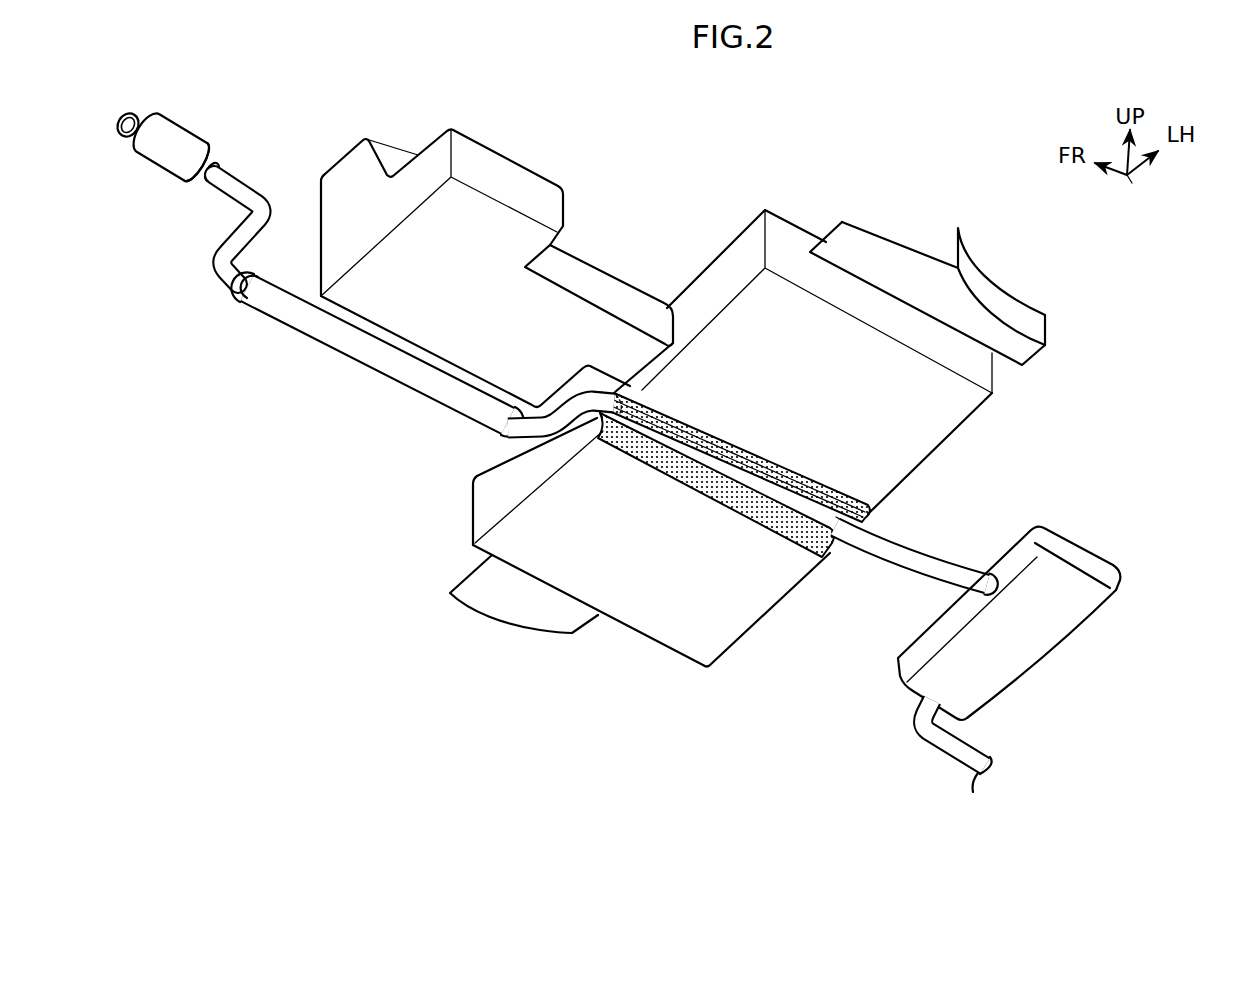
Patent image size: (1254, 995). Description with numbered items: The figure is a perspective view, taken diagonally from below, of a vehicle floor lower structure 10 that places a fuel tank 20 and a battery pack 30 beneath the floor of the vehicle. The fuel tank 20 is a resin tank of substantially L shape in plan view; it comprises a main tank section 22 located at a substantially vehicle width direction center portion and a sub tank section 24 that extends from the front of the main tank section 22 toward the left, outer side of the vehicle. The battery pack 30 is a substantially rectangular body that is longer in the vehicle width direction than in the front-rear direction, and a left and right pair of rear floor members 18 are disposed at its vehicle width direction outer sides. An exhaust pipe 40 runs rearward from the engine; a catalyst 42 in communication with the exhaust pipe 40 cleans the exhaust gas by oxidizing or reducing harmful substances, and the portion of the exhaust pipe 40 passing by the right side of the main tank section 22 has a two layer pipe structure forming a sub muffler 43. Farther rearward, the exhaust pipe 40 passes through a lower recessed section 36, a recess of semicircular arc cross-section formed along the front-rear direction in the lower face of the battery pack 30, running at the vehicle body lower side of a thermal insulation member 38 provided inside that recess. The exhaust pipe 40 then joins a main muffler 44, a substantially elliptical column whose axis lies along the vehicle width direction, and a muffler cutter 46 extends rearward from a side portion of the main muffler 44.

The vehicle floor lower structure 10 is at (666, 193).
The rear floor members 18 is at (982, 285).
The fuel tank 20 is at (373, 137).
The main tank section 22 is at (348, 162).
The sub tank section 24 is at (502, 170).
The battery pack 30 is at (765, 206).
The lower recessed section 36 is at (607, 447).
The thermal insulation member 38 is at (742, 497).
The exhaust pipe 40 is at (217, 197).
The catalyst 42 is at (175, 138).
The sub muffler 43 is at (313, 345).
The main muffler 44 is at (1083, 557).
The muffler cutter 46 is at (930, 747).